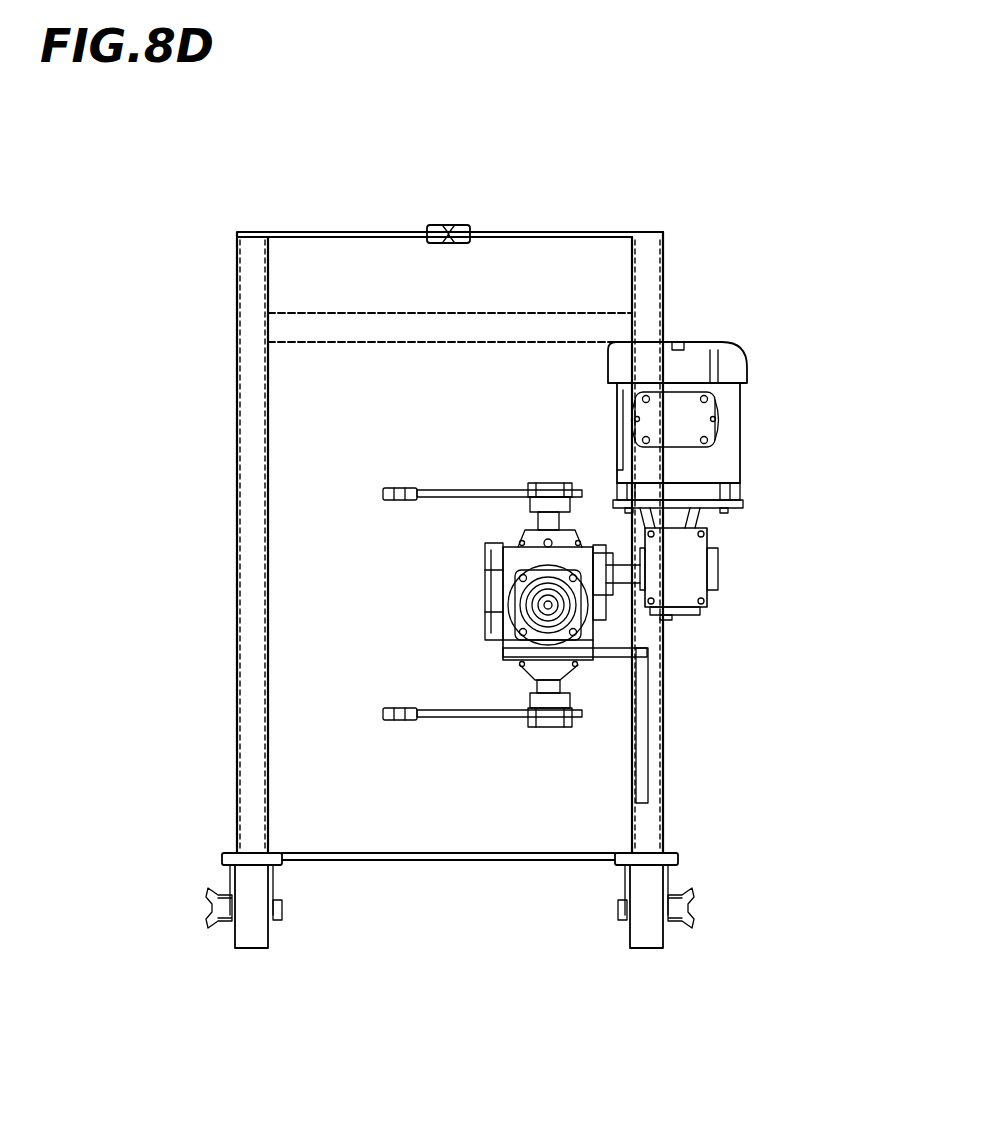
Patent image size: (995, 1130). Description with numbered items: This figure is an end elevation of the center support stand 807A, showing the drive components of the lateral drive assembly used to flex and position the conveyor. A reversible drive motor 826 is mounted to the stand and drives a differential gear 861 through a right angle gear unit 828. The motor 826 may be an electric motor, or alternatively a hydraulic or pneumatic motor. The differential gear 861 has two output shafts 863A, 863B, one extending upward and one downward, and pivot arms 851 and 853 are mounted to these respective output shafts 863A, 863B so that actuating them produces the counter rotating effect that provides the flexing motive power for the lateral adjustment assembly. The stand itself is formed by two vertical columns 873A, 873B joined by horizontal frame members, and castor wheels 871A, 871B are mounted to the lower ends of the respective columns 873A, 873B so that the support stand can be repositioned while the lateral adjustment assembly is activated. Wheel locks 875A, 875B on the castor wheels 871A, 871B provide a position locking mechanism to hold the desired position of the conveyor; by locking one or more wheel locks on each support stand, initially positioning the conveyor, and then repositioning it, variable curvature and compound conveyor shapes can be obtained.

The center support stand 807A is at (663, 256).
The reversible drive motor 826 is at (747, 355).
The right angle gear unit 828 is at (718, 580).
The pivot arm 851 is at (450, 487).
The pivot arm 853 is at (452, 722).
The differential gear 861 is at (605, 657).
The output shaft 863A is at (528, 518).
The output shaft 863B is at (538, 690).
The castor wheel 871A is at (664, 938).
The castor wheel 871B is at (236, 940).
The column 873A is at (664, 741).
The column 873B is at (236, 742).
The wheel lock 875A is at (694, 897).
The wheel lock 875B is at (207, 895).